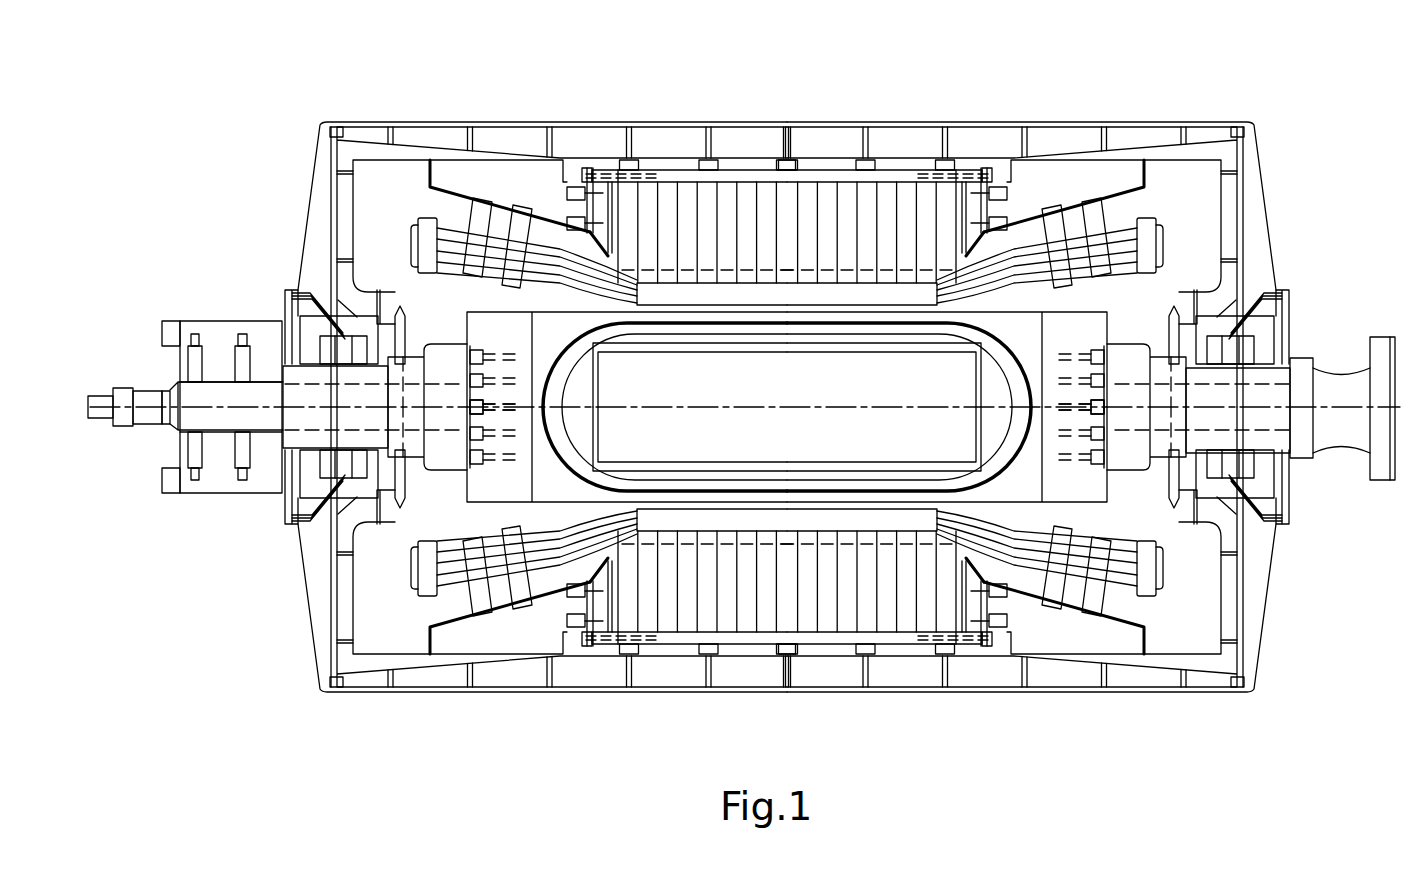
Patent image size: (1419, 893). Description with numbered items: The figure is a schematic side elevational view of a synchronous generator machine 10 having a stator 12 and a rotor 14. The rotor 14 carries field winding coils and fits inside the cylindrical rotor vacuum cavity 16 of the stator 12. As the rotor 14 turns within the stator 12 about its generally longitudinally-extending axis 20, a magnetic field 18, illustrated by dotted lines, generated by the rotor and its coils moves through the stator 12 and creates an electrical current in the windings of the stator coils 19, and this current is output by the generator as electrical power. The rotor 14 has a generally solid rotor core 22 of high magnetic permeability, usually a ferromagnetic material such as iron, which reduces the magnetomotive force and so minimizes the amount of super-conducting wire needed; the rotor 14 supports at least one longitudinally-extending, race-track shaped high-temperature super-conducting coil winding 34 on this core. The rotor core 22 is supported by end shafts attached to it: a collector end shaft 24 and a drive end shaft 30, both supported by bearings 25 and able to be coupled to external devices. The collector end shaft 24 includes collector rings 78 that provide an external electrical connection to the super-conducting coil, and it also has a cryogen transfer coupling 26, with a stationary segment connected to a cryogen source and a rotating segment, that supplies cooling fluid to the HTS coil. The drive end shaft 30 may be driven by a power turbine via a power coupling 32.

The synchronous generator machine 10 is at (468, 96).
The stator 12 is at (688, 208).
The rotor 14 is at (487, 492).
The rotor vacuum cavity 16 is at (444, 298).
The magnetic field 18 is at (888, 262).
The stator coils 19 is at (1123, 220).
The axis 20 is at (240, 404).
The rotor core 22 is at (746, 438).
The collector end shaft 24 is at (360, 388).
The bearings 25 is at (318, 498).
The cryogen transfer coupling 26 is at (138, 386).
The drive end shaft 30 is at (1263, 390).
The power coupling 32 is at (1386, 477).
The high-temperature super-conducting coil winding 34 is at (1053, 316).
The collector rings 78 is at (232, 479).